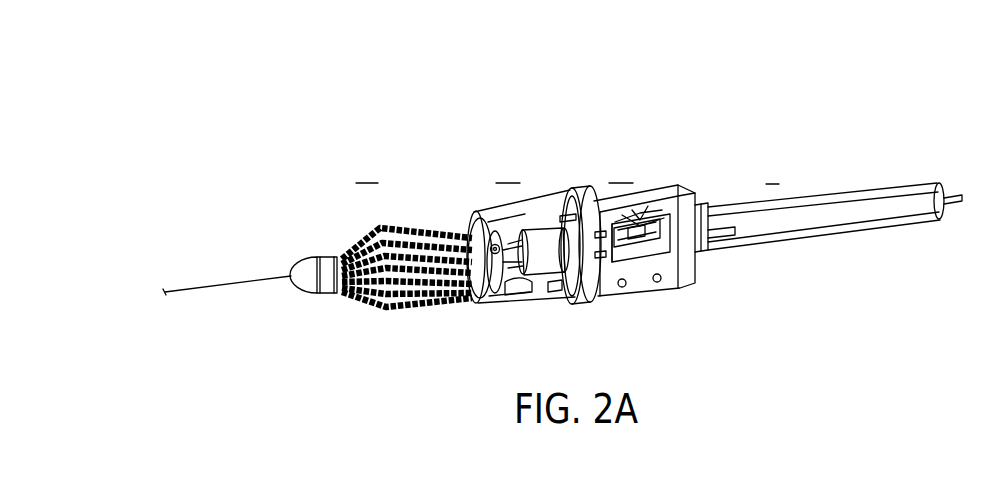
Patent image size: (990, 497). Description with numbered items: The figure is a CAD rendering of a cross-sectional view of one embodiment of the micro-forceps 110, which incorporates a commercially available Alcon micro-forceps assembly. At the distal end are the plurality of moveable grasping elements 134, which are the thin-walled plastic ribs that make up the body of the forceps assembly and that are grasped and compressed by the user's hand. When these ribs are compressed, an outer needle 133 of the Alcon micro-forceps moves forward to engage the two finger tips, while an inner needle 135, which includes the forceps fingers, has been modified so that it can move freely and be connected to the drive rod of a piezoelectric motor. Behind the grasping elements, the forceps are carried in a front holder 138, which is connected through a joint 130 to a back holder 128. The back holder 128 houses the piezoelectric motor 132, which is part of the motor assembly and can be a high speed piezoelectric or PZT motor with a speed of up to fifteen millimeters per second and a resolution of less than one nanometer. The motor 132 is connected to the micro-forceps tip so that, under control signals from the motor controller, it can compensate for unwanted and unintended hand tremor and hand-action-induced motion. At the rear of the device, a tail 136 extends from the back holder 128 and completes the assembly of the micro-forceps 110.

The micro-forceps 110 is at (771, 114).
The back holder 128 is at (655, 184).
The joint 130 is at (545, 264).
The piezoelectric motor 132 is at (658, 258).
The outer needle 133 is at (216, 283).
The moveable grasping elements 134 is at (393, 174).
The inner needle 135 is at (517, 264).
The tail 136 is at (835, 192).
The front holder 138 is at (542, 193).